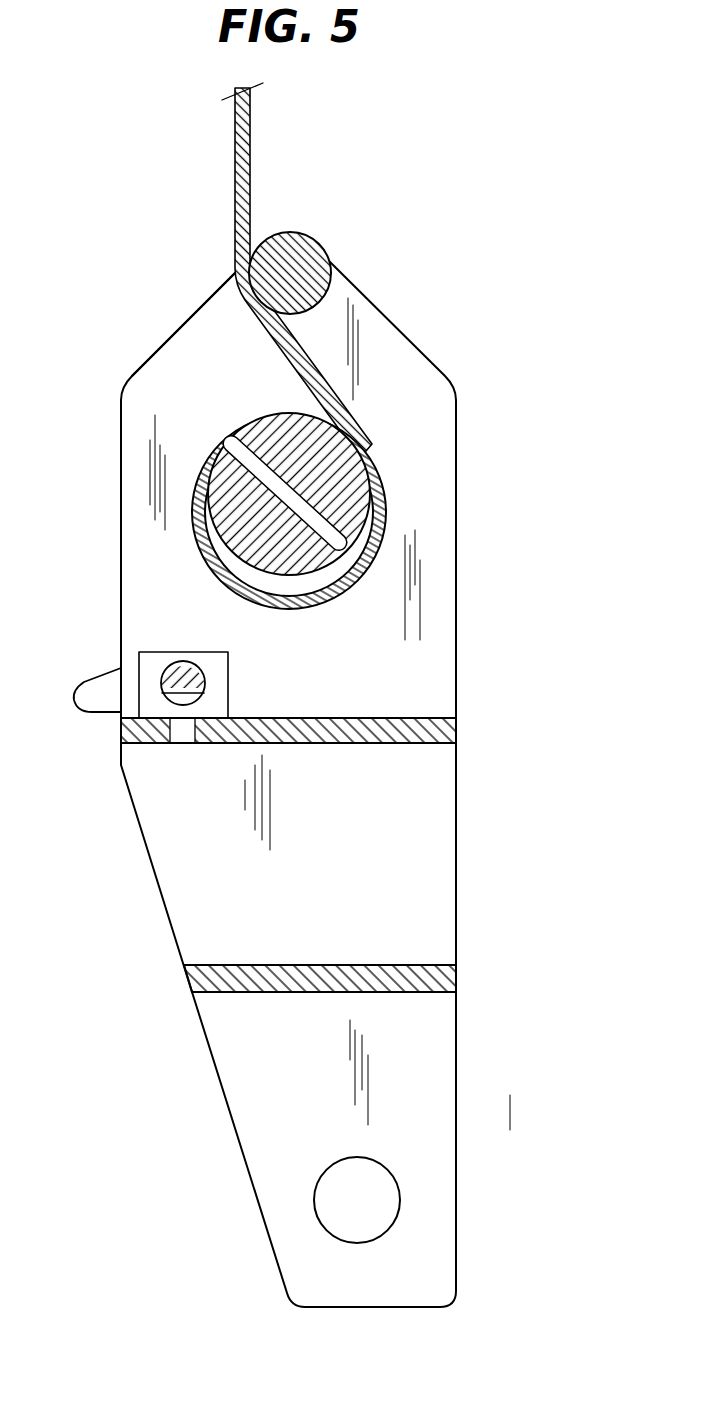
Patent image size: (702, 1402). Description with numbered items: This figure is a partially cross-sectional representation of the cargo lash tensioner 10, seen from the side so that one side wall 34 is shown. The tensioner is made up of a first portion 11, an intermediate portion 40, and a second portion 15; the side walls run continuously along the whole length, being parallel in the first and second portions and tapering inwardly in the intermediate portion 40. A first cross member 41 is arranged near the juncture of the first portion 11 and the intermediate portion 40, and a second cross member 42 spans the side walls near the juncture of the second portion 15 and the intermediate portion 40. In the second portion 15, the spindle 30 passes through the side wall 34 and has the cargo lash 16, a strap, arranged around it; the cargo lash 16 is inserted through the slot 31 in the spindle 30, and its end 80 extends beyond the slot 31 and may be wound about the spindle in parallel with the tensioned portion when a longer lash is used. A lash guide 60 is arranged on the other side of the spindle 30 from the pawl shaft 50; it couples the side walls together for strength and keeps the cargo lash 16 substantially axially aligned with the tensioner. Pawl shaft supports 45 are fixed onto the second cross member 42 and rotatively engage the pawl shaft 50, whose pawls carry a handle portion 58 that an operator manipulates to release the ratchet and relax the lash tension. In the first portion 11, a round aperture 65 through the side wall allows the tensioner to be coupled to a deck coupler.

The cargo lash tensioner 10 is at (560, 612).
The first portion 11 is at (483, 1123).
The second portion 15 is at (478, 514).
The cargo lash 16 is at (235, 170).
The spindle 30 is at (283, 415).
The slot 31 is at (240, 437).
The side wall 34 is at (178, 350).
The intermediate portion 40 is at (478, 845).
The first cross member 41 is at (297, 965).
The second cross member 42 is at (368, 745).
The pawl shaft support 45 is at (217, 673).
The pawl shaft 50 is at (183, 662).
The handle portion 58 is at (97, 683).
The lash guide 60 is at (303, 262).
The aperture 65 is at (350, 1177).
The end 80 is at (297, 582).